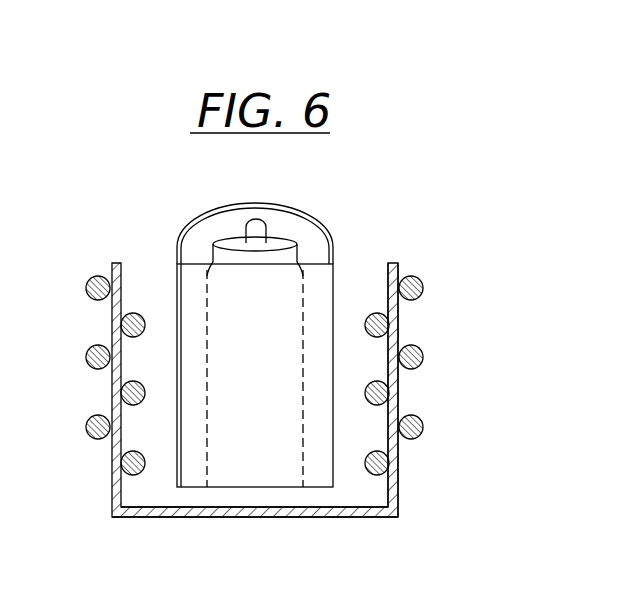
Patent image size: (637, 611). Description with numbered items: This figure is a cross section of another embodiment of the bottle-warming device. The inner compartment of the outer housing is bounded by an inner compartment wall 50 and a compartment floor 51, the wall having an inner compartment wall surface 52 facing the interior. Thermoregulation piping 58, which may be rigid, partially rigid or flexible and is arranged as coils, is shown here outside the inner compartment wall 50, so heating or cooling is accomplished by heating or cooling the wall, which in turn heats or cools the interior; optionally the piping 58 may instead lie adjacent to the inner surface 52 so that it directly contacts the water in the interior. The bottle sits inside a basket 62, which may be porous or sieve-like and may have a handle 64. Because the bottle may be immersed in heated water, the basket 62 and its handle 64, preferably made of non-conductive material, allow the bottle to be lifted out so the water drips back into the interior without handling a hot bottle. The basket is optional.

The inner compartment wall 50 is at (393, 263).
The compartment floor 51 is at (242, 505).
The inner compartment wall surface 52 is at (385, 439).
The thermoregulation piping 58 is at (423, 279).
The basket 62 is at (334, 270).
The handle 64 is at (176, 246).